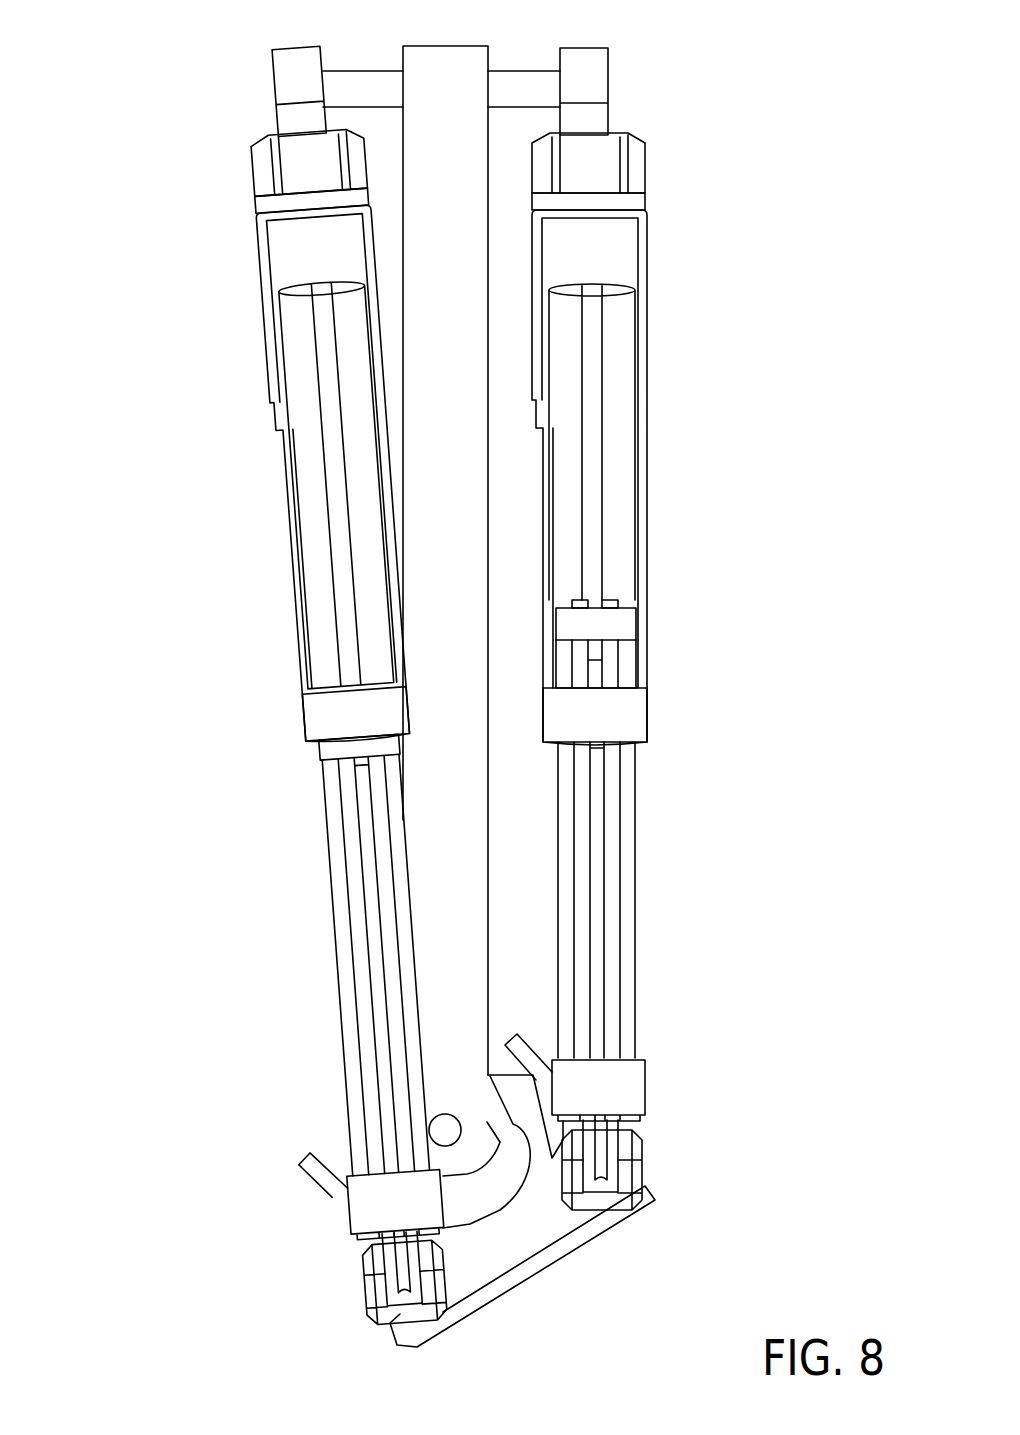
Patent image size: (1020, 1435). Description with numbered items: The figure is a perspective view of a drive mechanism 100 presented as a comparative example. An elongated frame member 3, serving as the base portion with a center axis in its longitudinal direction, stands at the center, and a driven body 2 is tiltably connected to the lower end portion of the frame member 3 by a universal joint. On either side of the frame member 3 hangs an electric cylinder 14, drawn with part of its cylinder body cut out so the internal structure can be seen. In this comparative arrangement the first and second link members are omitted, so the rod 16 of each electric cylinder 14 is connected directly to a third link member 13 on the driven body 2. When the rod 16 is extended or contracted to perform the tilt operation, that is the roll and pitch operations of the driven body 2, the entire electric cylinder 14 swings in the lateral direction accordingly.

The drive mechanism 100 is at (122, 130).
The driven body 2 is at (528, 1277).
The frame member 3 is at (468, 65).
The third link member 13 is at (637, 1165).
The electric cylinder 14 is at (283, 503).
The rod 16 is at (347, 975).